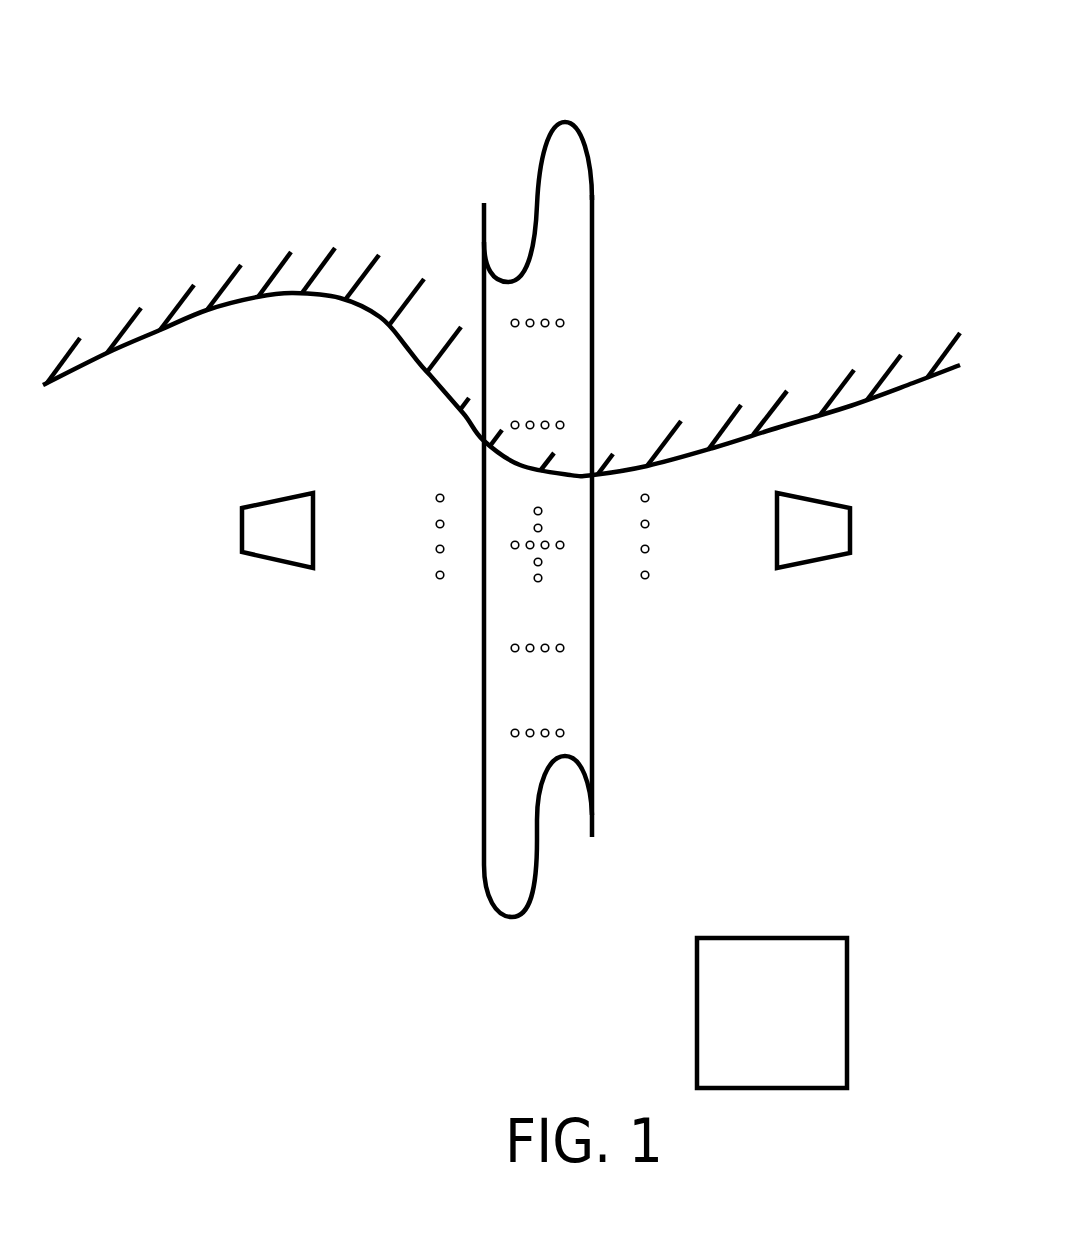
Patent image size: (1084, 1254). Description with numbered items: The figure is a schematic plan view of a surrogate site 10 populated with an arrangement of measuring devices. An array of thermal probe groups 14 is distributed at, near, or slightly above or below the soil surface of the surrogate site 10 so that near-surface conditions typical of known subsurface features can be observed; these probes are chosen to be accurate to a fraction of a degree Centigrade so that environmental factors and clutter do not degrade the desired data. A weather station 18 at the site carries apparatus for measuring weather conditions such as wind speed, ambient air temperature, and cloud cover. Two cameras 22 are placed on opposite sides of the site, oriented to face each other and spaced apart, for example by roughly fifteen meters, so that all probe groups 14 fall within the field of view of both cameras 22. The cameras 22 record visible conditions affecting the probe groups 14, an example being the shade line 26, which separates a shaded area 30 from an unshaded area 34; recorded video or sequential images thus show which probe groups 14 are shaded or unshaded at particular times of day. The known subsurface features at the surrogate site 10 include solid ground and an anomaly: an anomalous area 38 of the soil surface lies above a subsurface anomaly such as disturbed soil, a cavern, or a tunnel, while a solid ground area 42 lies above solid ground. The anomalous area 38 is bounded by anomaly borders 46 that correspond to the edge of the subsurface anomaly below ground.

The surrogate site 10 is at (170, 98).
The thermal probe groups 14 is at (558, 297).
The weather station 18 is at (693, 1027).
The cameras 22 is at (278, 498).
The shade line 26 is at (405, 346).
The shaded area 30 is at (336, 170).
The unshaded area 34 is at (172, 688).
The anomalous area 38 is at (547, 227).
The solid ground area 42 is at (224, 688).
The anomaly borders 46 is at (595, 683).